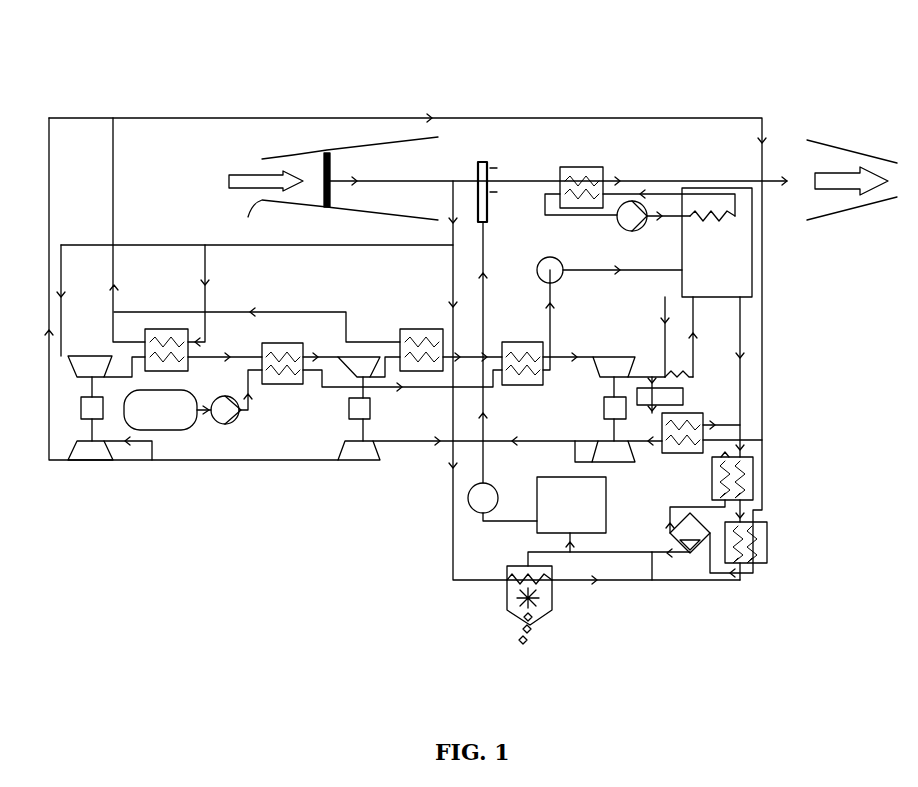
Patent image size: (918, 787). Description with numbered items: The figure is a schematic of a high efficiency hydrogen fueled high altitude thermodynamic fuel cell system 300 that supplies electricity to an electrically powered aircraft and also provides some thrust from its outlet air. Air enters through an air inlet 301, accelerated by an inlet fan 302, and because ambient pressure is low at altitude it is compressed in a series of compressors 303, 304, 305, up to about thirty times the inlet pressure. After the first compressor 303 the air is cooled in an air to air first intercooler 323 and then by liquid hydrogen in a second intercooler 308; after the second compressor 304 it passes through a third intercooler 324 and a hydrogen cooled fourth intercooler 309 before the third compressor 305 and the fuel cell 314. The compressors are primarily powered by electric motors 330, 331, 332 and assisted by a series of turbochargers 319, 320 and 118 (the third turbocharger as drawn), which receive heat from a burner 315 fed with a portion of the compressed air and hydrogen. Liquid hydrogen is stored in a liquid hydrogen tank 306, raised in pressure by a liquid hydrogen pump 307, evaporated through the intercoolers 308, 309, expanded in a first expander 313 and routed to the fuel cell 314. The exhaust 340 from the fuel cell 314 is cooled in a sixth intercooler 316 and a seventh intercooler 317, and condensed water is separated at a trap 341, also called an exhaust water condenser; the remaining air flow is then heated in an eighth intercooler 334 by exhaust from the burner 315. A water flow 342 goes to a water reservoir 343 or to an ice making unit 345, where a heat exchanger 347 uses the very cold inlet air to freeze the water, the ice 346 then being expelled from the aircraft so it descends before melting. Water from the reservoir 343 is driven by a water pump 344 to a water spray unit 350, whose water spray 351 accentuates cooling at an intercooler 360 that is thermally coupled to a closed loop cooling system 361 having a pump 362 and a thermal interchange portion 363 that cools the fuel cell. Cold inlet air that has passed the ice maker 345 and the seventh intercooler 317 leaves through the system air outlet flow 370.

The hydrogen fueled high altitude thermodynamic fuel cell system 300 is at (665, 50).
The air inlet 301 is at (262, 159).
The inlet fan 302 is at (327, 153).
The first compressor 303 is at (106, 356).
The second compressor 304 is at (350, 378).
The third compressor 305 is at (628, 357).
The liquid hydrogen tank 306 is at (185, 430).
The liquid hydrogen pump 307 is at (232, 425).
The second intercooler 308 is at (290, 343).
The fourth intercooler 309 is at (537, 342).
The first expander 313 is at (537, 265).
The fuel cell 314 is at (752, 275).
The burner 315 is at (683, 395).
The sixth intercooler 316 is at (753, 478).
The seventh intercooler 317 is at (767, 545).
The compressor 118 is at (598, 446).
The turbocharger 319 is at (378, 464).
The turbocharger 320 is at (100, 463).
The first intercooler 323 is at (178, 329).
The third intercooler 324 is at (437, 329).
The electric motor 330 is at (81, 407).
The electric motor 331 is at (349, 410).
The electric motor 332 is at (604, 406).
The eighth intercooler 334 is at (703, 418).
The exhaust 340 is at (763, 322).
The trap 341 is at (690, 518).
The water flow 342 is at (652, 560).
The water reservoir 343 is at (606, 510).
The water pump 344 is at (468, 500).
The ice making unit 345 is at (515, 566).
The water outlet 346 is at (517, 620).
The heat exchanger 347 is at (513, 583).
The water spray unit 350 is at (478, 170).
The water spray 351 is at (490, 168).
The eighth intercooler 360 is at (583, 167).
The closed loop cooling system 361 is at (575, 212).
The pump 362 is at (626, 231).
The thermal interchange portion 363 is at (725, 218).
The system air outlet flow 370 is at (838, 180).